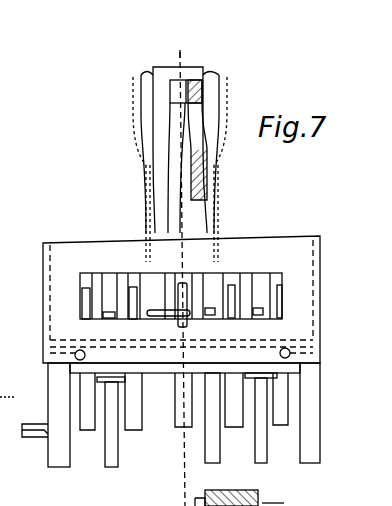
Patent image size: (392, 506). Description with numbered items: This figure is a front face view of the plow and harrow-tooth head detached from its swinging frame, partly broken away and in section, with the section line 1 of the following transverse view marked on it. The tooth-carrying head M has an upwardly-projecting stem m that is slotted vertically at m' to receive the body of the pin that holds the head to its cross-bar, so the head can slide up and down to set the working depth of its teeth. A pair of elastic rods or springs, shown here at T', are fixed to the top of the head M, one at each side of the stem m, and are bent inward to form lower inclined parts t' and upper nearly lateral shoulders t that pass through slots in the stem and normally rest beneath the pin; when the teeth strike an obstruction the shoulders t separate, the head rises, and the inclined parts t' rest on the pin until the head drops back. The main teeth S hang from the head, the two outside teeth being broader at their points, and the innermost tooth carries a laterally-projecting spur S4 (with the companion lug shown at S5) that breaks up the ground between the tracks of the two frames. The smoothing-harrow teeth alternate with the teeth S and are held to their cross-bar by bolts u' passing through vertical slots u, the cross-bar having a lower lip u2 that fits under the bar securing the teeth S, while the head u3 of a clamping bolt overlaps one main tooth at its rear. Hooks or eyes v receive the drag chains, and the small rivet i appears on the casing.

The forked tube T' is at (176, 150).
The spring shoulder t is at (174, 169).
The inclined part of spring t' is at (170, 149).
The stem m is at (180, 149).
The vertical slot m' is at (176, 183).
The tooth-carrying head M is at (272, 226).
The hooks or eyes v is at (135, 276).
The teeth S is at (258, 448).
The laterally-projecting tooth or spur S4 is at (34, 437).
The side lug S5 is at (30, 397).
The vertical slot of tooth U u is at (178, 357).
The bolts u' is at (242, 358).
The lower lip or flange u2 is at (145, 370).
The bolt head u3 is at (181, 327).
The rivet i is at (256, 366).
The section line 1 is at (184, 486).